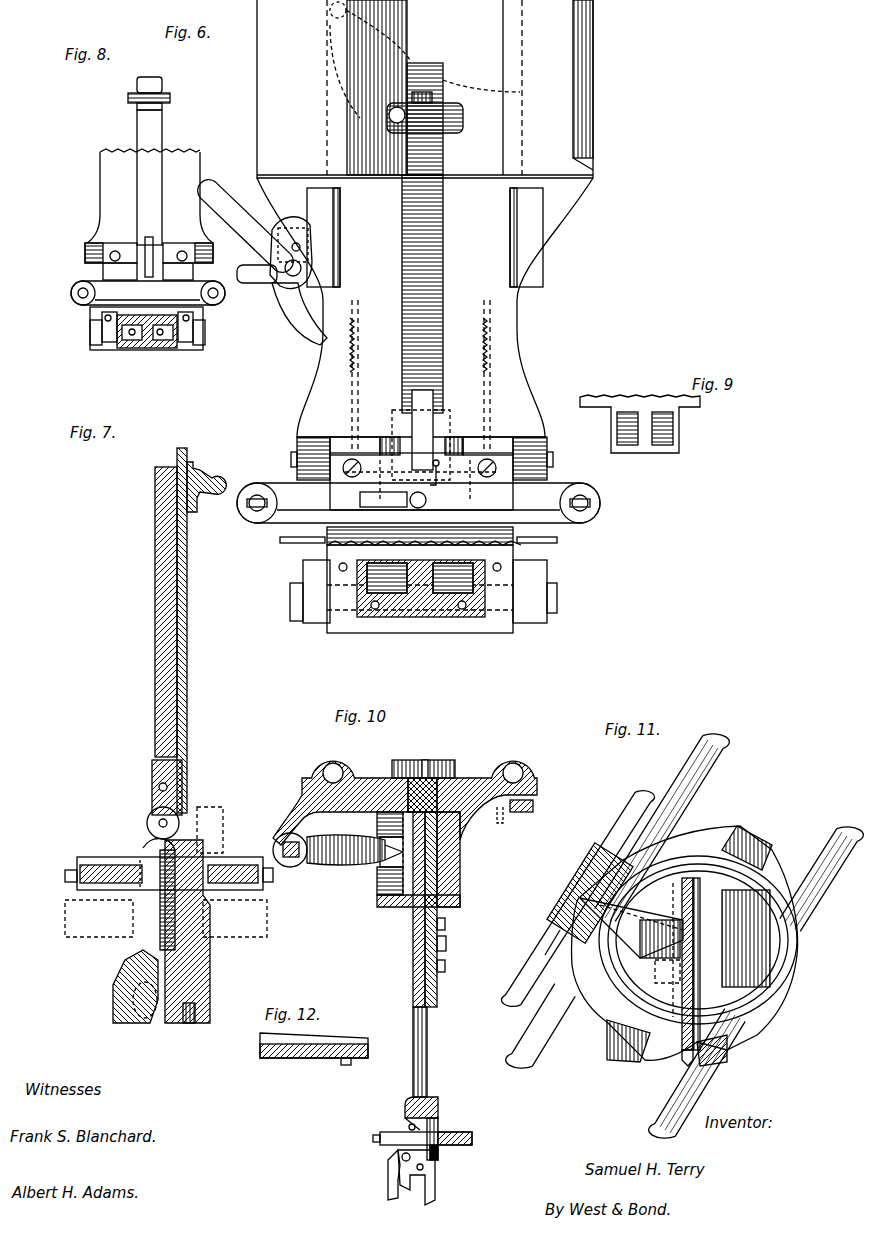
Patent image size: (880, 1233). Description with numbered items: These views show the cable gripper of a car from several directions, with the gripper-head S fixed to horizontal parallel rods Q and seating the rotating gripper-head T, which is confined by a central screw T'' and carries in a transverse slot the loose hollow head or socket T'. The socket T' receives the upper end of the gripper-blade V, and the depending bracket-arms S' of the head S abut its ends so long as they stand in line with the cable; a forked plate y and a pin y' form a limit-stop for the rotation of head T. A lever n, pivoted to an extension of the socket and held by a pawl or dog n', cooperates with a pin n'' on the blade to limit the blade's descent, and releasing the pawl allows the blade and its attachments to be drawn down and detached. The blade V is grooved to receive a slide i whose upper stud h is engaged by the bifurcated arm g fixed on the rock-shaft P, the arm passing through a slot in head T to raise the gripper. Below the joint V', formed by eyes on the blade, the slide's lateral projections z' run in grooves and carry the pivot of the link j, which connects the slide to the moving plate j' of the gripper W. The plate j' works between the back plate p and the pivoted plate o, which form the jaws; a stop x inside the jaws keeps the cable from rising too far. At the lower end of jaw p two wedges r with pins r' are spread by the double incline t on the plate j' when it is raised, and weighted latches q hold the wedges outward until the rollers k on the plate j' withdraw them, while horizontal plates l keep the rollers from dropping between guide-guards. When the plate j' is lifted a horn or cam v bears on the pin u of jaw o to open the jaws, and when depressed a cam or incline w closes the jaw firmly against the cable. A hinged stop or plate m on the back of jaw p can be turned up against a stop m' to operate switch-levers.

In FIG. 6, the laterally-projecting stud h is at (463, 118).
In FIG. 8, the laterally-projecting stud h is at (170, 98).
In FIG. 7, the laterally-projecting stud h is at (205, 480).
In FIG. 10, the laterally-projecting stud h is at (395, 855).
In FIG. 11, the laterally-projecting stud h is at (662, 979).
In FIG. 6, the slide i is at (422, 238).
In FIG. 8, the slide i is at (162, 128).
In FIG. 7, the slide i is at (187, 618).
In FIG. 10, the slide i is at (413, 965).
In FIG. 11, the slide i is at (693, 965).
In FIG. 6, the gripper-blade V is at (425, 307).
In FIG. 8, the gripper-blade V is at (151, 195).
In FIG. 7, the gripper-blade V is at (142, 641).
In FIG. 10, the gripper-blade V is at (435, 1029).
In FIG. 11, the gripper-blade V is at (739, 1038).
In FIG. 6, the joint V' is at (572, 457).
In FIG. 8, the joint V' is at (57, 253).
In FIG. 10, the joint V' is at (436, 1116).
In FIG. 8, the bar body Y is at (177, 191).
In FIG. 8, the lateral projections z' is at (149, 244).
In FIG. 6, the link j is at (421, 435).
In FIG. 7, the link j is at (180, 776).
In FIG. 9, the moving plate j' is at (640, 424).
In FIG. 7, the moving plate j' is at (186, 816).
In FIG. 10, the moving plate j' is at (450, 1161).
In FIG. 6, the horizontal plate l is at (532, 514).
In FIG. 8, the horizontal plate l is at (148, 289).
In FIG. 7, the horizontal plate l is at (80, 890).
In FIG. 6, the rollers k is at (252, 520).
In FIG. 8, the rollers k is at (83, 305).
In FIG. 7, the rollers k is at (95, 857).
In FIG. 10, the rollers k is at (422, 1128).
In FIG. 6, the wedges r is at (424, 603).
In FIG. 8, the wedges r is at (145, 334).
In FIG. 7, the wedges r is at (141, 1018).
In FIG. 10, the wedges r is at (406, 1202).
In FIG. 12, the wedges r is at (314, 1058).
In FIG. 6, the pins r' is at (414, 613).
In FIG. 12, the pins r' is at (348, 1072).
In FIG. 6, the double incline t is at (421, 617).
In FIG. 8, the double incline t is at (140, 348).
In FIG. 9, the double incline t is at (645, 453).
In FIG. 6, the gripper W is at (435, 589).
In FIG. 8, the gripper W is at (146, 339).
In FIG. 10, the rotating gripper-head T is at (463, 859).
In FIG. 11, the rotating gripper-head T is at (711, 953).
In FIG. 6, the hollow head or socket T' is at (425, 89).
In FIG. 10, the hollow head or socket T' is at (435, 892).
In FIG. 11, the hollow head or socket T' is at (718, 1035).
In FIG. 10, the central screw T'' is at (424, 775).
In FIG. 6, the lever n is at (246, 223).
In FIG. 7, the lever n is at (196, 931).
In FIG. 10, the lever n is at (452, 939).
In FIG. 6, the pivoted pawl or dog n' is at (274, 239).
In FIG. 7, the pivoted pawl or dog n' is at (166, 918).
In FIG. 10, the pivoted pawl or dog n' is at (453, 918).
In FIG. 6, the pin or projection n'' is at (379, 327).
In FIG. 10, the pin or projection n'' is at (466, 956).
In FIG. 6, the stop or plate m is at (419, 483).
In FIG. 7, the stop or plate m is at (231, 834).
In FIG. 6, the stop m' is at (434, 484).
In FIG. 6, the back plate p is at (421, 481).
In FIG. 7, the back plate p is at (210, 988).
In FIG. 10, the back plate p is at (425, 1177).
In FIG. 6, the weighted latches q is at (290, 543).
In FIG. 7, the lateral pin u is at (150, 835).
In FIG. 7, the horn or cam v is at (140, 858).
In FIG. 10, the horn or cam v is at (410, 1127).
In FIG. 10, the cam or inclined projection w is at (405, 1125).
In FIG. 7, the projecting stop x is at (210, 1000).
In FIG. 7, the pivoted plate o is at (120, 965).
In FIG. 10, the pivoted plate o is at (389, 1175).
In FIG. 10, the gripper-head S is at (416, 803).
In FIG. 11, the gripper-head S is at (685, 946).
In FIG. 11, the depending bracket-arms S' is at (687, 950).
In FIG. 10, the slotted or forked plate y is at (530, 819).
In FIG. 10, the pin y' is at (499, 827).
In FIG. 10, the rock-shaft P is at (290, 857).
In FIG. 11, the rock-shaft P is at (622, 810).
In FIG. 10, the arm g is at (355, 866).
In FIG. 11, the arm g is at (631, 928).
In FIG. 11, the horizontal parallel rods Q is at (718, 765).